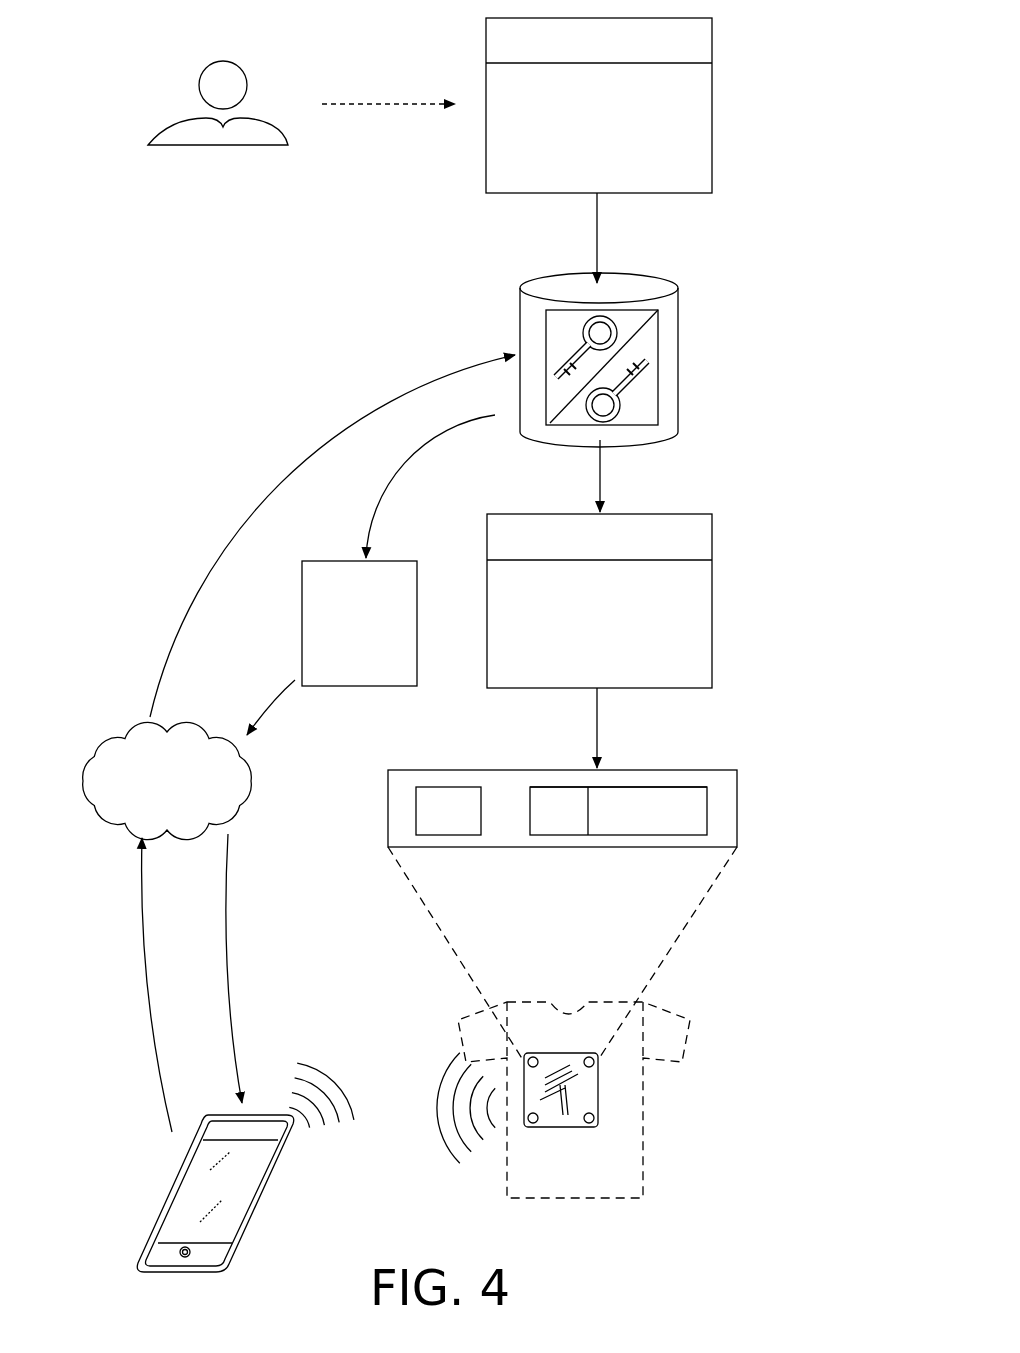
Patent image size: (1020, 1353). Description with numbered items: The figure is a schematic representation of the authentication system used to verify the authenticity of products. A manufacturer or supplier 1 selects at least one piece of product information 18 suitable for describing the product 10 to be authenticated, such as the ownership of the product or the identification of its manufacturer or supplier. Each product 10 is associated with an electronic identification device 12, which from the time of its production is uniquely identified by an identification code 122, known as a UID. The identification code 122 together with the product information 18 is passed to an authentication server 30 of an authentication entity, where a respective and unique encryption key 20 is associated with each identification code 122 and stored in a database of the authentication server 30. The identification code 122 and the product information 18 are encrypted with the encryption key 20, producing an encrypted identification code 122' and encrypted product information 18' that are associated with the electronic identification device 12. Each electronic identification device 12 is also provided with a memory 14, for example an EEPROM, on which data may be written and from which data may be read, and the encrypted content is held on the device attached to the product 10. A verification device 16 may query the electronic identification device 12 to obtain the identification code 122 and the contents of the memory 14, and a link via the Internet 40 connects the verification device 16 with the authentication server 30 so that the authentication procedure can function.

The manufacturer or supplier 1 is at (140, 125).
The product 10 is at (643, 1115).
The electronic identification device 12 is at (742, 815).
The memory 14 is at (643, 770).
The verification device 16 is at (128, 1175).
The product information 18 is at (498, 374).
The encrypted product information 18' is at (675, 761).
The encryption key 20 is at (663, 365).
The authentication server 30 is at (520, 322).
The Internet 40 is at (180, 796).
The identification code 122 is at (572, 432).
The encrypted identification code 122' is at (650, 707).